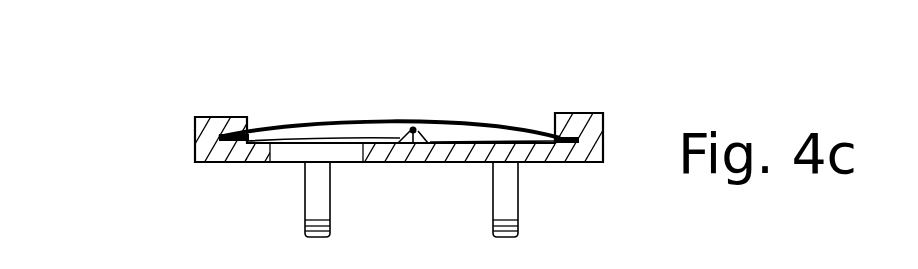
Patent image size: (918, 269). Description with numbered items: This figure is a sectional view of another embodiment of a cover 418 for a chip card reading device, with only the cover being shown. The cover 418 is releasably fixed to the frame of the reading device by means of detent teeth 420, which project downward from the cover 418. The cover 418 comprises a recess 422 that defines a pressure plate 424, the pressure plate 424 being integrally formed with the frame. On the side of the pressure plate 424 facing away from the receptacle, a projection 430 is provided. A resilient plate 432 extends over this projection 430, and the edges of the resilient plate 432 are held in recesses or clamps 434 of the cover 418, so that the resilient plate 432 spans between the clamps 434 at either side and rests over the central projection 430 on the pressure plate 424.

The cover 418 is at (170, 130).
The detent teeth 420 is at (503, 193).
The recess 422 is at (303, 152).
The pressure plate 424 is at (497, 150).
The projection 430 is at (418, 127).
The resilient plate 432 is at (337, 127).
The recesses or clamps 434 is at (218, 120).